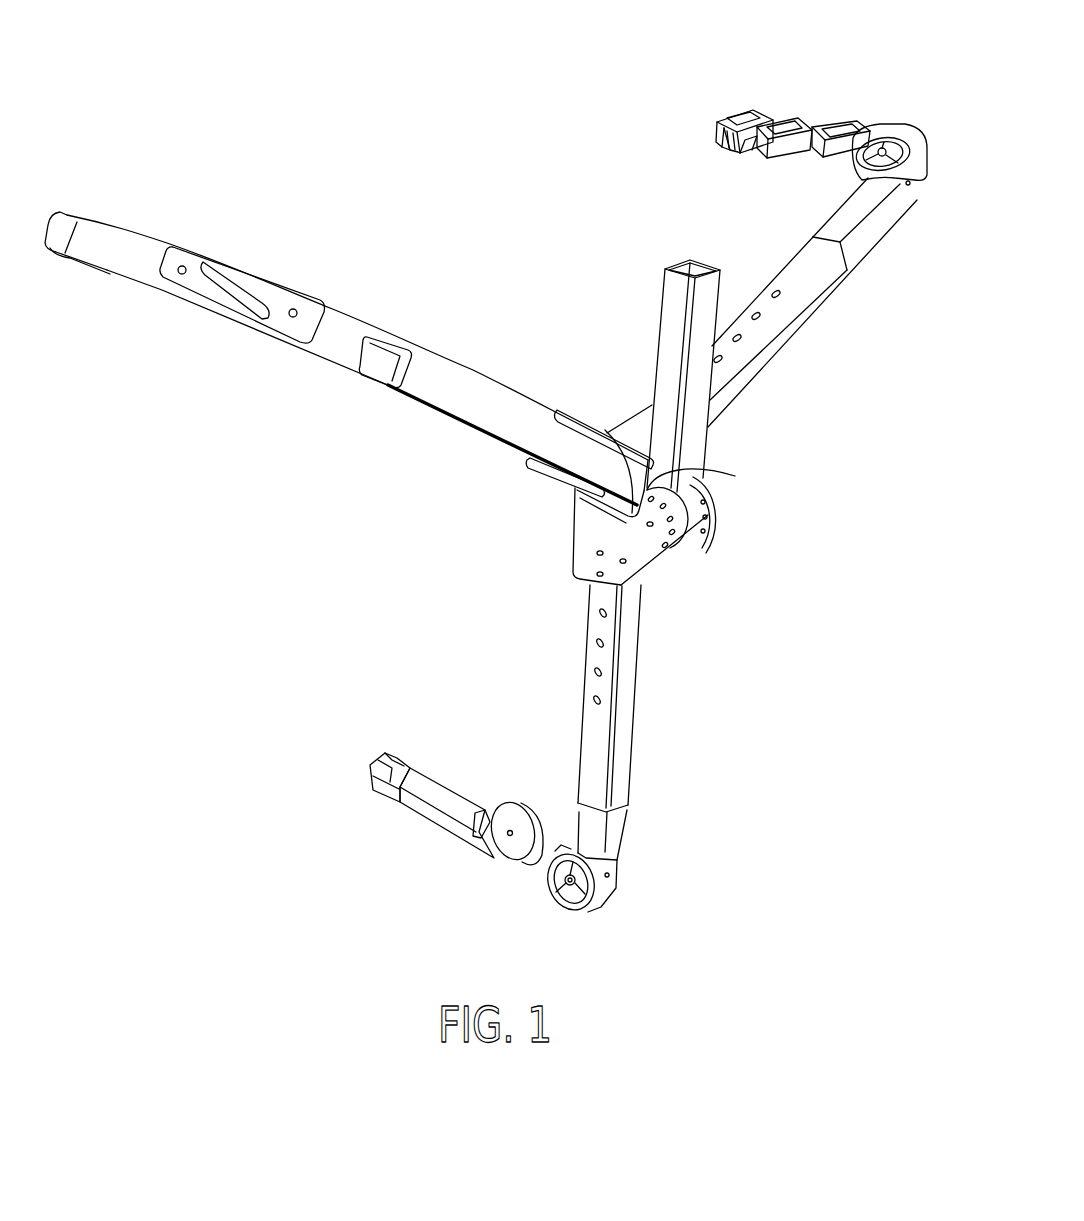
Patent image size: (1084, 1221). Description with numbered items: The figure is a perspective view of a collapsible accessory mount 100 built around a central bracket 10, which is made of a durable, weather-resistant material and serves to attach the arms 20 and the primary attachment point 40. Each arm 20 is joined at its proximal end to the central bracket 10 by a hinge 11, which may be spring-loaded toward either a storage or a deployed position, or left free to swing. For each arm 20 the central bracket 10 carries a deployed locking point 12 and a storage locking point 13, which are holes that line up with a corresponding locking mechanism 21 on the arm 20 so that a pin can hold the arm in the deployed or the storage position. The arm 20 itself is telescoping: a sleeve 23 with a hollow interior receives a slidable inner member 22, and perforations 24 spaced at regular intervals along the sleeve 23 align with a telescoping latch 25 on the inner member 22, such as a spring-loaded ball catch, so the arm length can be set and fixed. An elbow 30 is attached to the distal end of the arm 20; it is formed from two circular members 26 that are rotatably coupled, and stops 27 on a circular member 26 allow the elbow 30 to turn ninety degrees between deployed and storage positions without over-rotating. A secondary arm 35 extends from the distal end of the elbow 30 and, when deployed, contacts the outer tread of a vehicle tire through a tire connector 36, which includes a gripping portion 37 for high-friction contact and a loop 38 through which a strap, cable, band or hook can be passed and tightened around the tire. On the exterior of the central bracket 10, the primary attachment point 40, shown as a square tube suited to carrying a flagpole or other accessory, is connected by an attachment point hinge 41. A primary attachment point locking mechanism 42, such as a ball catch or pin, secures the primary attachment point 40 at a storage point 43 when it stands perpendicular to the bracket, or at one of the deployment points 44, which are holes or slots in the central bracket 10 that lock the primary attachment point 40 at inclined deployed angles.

The collapsible accessory mount 100 is at (766, 705).
The central bracket 10 is at (662, 571).
The hinge 11 is at (597, 553).
The deployed locking point 12 is at (623, 564).
The storage locking point 13 is at (626, 568).
The arm 20 is at (470, 428).
The locking mechanism 21 is at (598, 575).
The inner member 22 is at (347, 357).
The sleeve 23 is at (424, 388).
The perforations 24 is at (603, 673).
The telescoping latch 25 is at (589, 674).
The circular members 26 is at (553, 883).
The stops 27 is at (578, 848).
The elbow 30 is at (915, 199).
The secondary arm 35 is at (410, 812).
The tire connector 36 is at (787, 147).
The gripping portion 37 is at (720, 138).
The loop 38 is at (747, 119).
The primary attachment point 40 is at (666, 290).
The attachment point hinge 41 is at (647, 525).
The primary attachment point locking mechanism 42 is at (616, 462).
The storage point 43 is at (700, 526).
The deployment points 44 is at (670, 476).